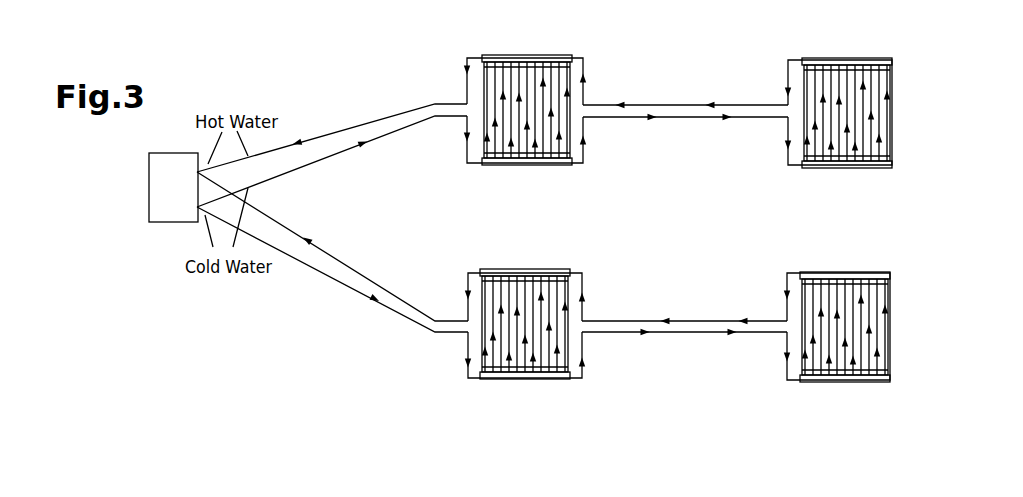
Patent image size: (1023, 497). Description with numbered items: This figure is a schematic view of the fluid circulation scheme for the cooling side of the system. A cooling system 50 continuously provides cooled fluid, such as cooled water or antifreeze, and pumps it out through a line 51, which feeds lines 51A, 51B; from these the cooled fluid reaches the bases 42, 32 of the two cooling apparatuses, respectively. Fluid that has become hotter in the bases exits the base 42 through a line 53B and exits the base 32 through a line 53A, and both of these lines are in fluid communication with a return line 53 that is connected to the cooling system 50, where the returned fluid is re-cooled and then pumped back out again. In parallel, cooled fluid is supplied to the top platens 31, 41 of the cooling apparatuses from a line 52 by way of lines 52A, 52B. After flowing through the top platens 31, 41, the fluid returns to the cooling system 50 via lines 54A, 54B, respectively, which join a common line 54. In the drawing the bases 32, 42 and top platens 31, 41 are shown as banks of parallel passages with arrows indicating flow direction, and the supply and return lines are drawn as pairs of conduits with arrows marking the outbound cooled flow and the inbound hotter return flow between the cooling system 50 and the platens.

The cooling system 50 is at (172, 187).
The top platen 31 is at (480, 90).
The base 32 is at (478, 347).
The top platen 41 is at (892, 108).
The base 42 is at (890, 325).
The line 51 is at (323, 270).
The line 52 is at (337, 155).
The return line 53 is at (333, 255).
The line 54 is at (350, 127).
The line 51A is at (537, 380).
The line 52A is at (535, 165).
The line 53A is at (537, 270).
The line 54A is at (533, 58).
The line 51B is at (845, 385).
The line 52B is at (848, 167).
The line 53B is at (843, 275).
The line 54B is at (845, 65).